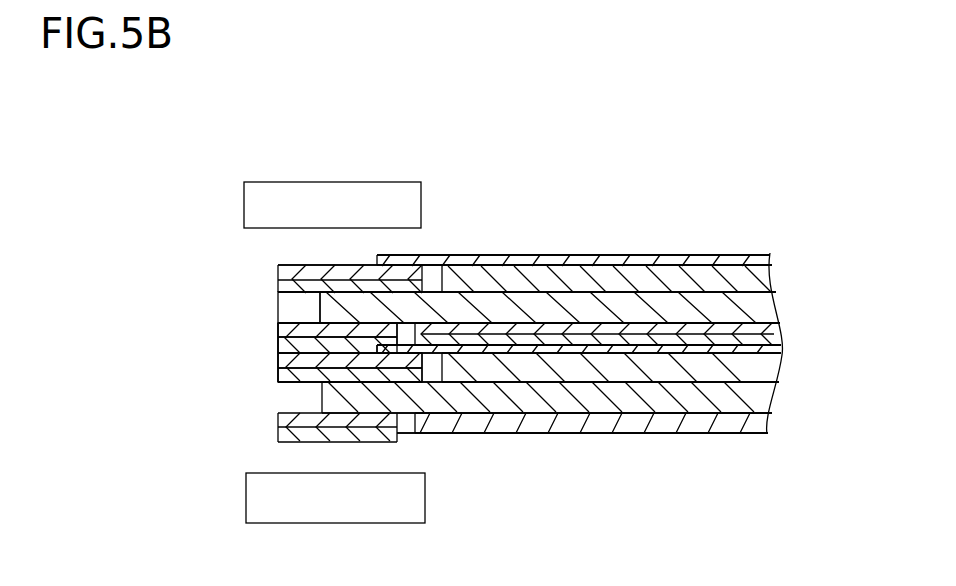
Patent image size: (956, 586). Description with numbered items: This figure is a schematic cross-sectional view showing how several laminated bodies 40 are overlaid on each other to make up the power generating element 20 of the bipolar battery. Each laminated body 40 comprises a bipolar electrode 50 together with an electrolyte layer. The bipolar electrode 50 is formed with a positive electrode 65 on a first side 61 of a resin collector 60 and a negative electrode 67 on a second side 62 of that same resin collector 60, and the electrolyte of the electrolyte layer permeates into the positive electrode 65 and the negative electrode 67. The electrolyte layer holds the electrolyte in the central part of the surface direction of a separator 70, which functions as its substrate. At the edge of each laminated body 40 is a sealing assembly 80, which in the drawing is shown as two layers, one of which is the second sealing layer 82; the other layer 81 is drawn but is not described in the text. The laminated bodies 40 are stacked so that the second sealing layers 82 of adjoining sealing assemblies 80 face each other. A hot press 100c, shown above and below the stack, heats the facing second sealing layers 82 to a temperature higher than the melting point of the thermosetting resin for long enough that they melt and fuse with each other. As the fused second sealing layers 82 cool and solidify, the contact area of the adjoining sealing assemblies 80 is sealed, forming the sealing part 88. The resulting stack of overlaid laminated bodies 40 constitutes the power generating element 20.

The power generating element 20 is at (790, 266).
The laminated body 40 is at (745, 203).
The bipolar electrode 50 is at (560, 203).
The resin collector 60 is at (493, 300).
The first side 61 is at (466, 285).
The second side 62 is at (516, 340).
The positive electrode 65 is at (465, 264).
The negative electrode 67 is at (525, 322).
The separator 70 is at (615, 350).
The sealing assembly 80 is at (208, 268).
The first edge layer 81 is at (278, 325).
The second sealing layer 82 is at (277, 343).
The sealing part 88 is at (292, 319).
The hot press 100c is at (244, 205).